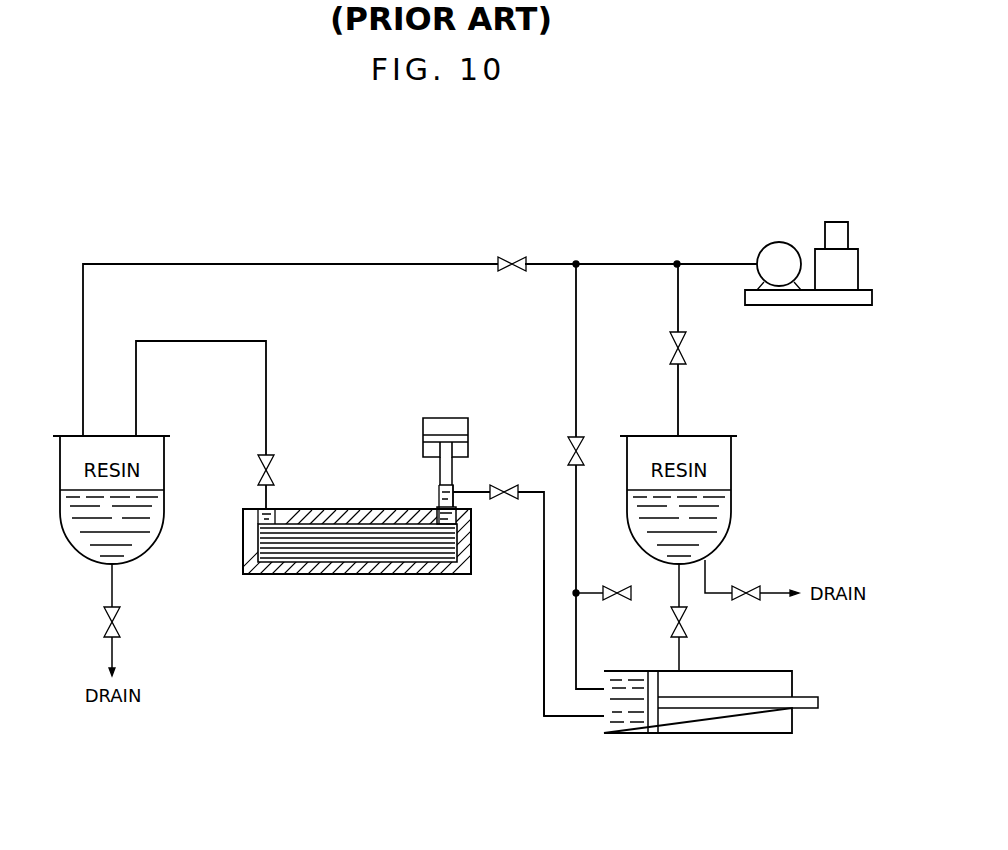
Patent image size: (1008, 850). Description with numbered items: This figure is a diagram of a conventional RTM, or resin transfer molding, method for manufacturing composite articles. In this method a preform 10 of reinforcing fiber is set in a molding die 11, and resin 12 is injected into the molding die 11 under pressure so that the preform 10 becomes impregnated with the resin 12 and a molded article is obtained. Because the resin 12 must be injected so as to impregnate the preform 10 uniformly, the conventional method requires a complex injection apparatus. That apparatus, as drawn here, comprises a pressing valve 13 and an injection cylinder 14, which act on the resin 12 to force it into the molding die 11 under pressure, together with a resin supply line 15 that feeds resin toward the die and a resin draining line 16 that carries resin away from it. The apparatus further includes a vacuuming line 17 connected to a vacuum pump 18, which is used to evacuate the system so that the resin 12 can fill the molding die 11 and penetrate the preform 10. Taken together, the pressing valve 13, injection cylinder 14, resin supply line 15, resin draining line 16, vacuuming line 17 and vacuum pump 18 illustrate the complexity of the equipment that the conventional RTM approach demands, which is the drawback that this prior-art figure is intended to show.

The preform 10 is at (278, 552).
The molding die 11 is at (355, 574).
The resin 12 is at (438, 495).
The pressing valve 13 is at (470, 425).
The injection cylinder 14 is at (702, 738).
The resin supply line 15 is at (544, 677).
The resin draining line 16 is at (190, 343).
The vacuuming line 17 is at (613, 258).
The vacuum pump 18 is at (820, 314).